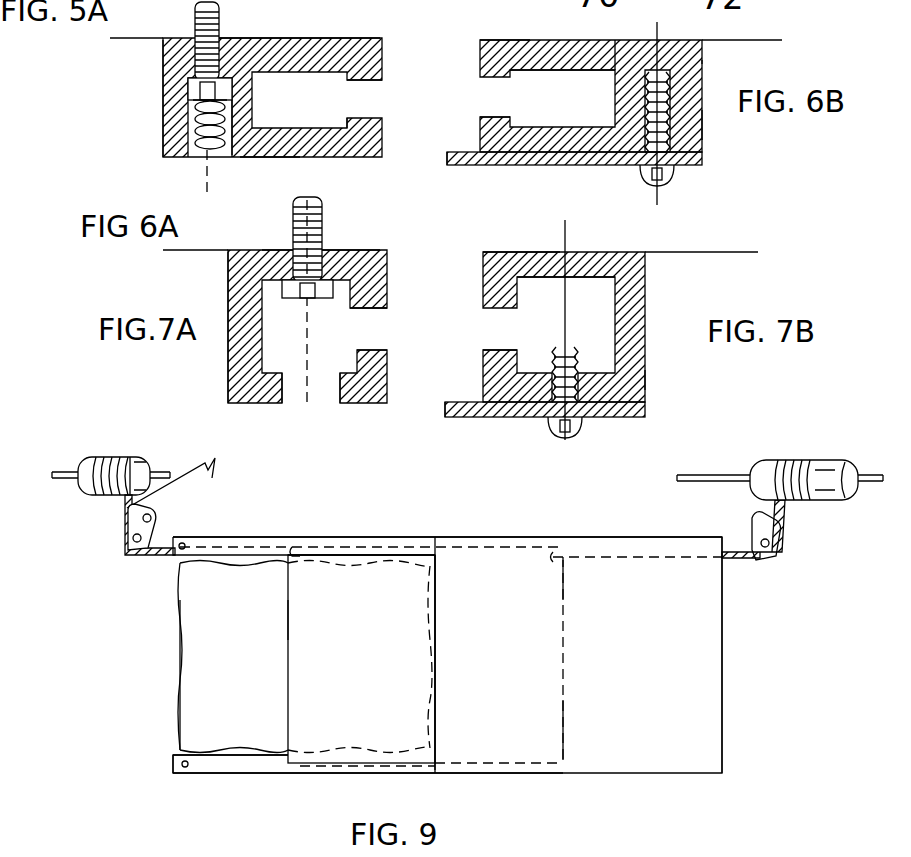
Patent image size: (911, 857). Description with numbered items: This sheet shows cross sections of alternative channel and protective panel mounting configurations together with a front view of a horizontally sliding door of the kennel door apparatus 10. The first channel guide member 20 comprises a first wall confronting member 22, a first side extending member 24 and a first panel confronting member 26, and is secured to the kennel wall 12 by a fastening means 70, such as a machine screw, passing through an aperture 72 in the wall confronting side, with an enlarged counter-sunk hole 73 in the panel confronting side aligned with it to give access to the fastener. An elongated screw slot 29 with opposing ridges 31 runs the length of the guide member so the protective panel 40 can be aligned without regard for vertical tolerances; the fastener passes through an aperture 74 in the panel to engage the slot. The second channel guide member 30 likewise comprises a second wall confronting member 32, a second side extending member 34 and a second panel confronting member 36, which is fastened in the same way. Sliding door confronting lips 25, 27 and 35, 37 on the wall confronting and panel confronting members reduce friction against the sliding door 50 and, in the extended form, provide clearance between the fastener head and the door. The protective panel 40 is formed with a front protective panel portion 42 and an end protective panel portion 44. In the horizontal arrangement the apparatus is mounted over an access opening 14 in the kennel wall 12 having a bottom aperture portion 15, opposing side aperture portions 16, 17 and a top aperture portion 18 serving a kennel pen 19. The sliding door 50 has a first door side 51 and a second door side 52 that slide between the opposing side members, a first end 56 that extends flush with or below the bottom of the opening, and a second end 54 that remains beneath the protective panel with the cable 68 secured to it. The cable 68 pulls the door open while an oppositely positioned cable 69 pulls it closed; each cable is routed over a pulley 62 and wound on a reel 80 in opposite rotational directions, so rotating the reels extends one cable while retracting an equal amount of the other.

In FIG. 9, the kennel door apparatus 10 is at (553, 778).
In FIG. 6A, the kennel wall 12 is at (143, 40).
In FIG. 6B, the kennel wall 12 is at (735, 40).
In FIG. 7A, the kennel wall 12 is at (192, 250).
In FIG. 7B, the kennel wall 12 is at (670, 252).
In FIG. 9, the access opening 14 is at (210, 650).
In FIG. 9, the bottom aperture portion 15 is at (218, 755).
In FIG. 9, the side aperture portion 16 is at (182, 615).
In FIG. 9, the side aperture portion 17 is at (437, 590).
In FIG. 9, the top aperture portion 18 is at (273, 553).
In FIG. 9, the kennel pen 19 is at (217, 708).
In FIG. 6A, the first channel guide member 20 is at (158, 90).
In FIG. 7A, the first channel guide member 20 is at (218, 298).
In FIG. 9, the first channel guide member 20 is at (362, 550).
In FIG. 6A, the first wall confronting member 22 is at (310, 38).
In FIG. 7A, the first wall confronting member 22 is at (280, 250).
In FIG. 6A, the first side extending member 24 is at (165, 140).
In FIG. 7A, the first side extending member 24 is at (228, 383).
In FIG. 6A, the sliding door confronting lip 25 is at (360, 80).
In FIG. 7A, the sliding door confronting lip 25 is at (365, 307).
In FIG. 6A, the first panel confronting member 26 is at (255, 157).
In FIG. 7A, the first panel confronting member 26 is at (355, 403).
In FIG. 9, the first panel confronting member 26 is at (340, 550).
In FIG. 6A, the sliding door confronting lip 27 is at (347, 122).
In FIG. 7A, the sliding door confronting lip 27 is at (365, 352).
In FIG. 6A, the screw slot 29 is at (204, 152).
In FIG. 6B, the screw slot 29 is at (700, 62).
In FIG. 6B, the second channel guide member 30 is at (708, 104).
In FIG. 7B, the second channel guide member 30 is at (645, 340).
In FIG. 9, the second channel guide member 30 is at (244, 760).
In FIG. 6B, the opposing ridges 31 is at (650, 70).
In FIG. 6B, the second wall confronting member 32 is at (525, 40).
In FIG. 7B, the second wall confronting member 32 is at (530, 252).
In FIG. 6B, the second side extending member 34 is at (702, 125).
In FIG. 7B, the second side extending member 34 is at (645, 380).
In FIG. 6B, the sliding door confronting lip 35 is at (493, 72).
In FIG. 7B, the sliding door confronting lip 35 is at (485, 300).
In FIG. 6B, the second panel confronting member 36 is at (530, 165).
In FIG. 7B, the second panel confronting member 36 is at (500, 417).
In FIG. 9, the second panel confronting member 36 is at (330, 763).
In FIG. 6B, the sliding door confronting lip 37 is at (487, 117).
In FIG. 7B, the sliding door confronting lip 37 is at (490, 350).
In FIG. 6B, the protective panel 40 is at (448, 148).
In FIG. 7B, the protective panel 40 is at (458, 402).
In FIG. 9, the protective panel 40 is at (645, 745).
In FIG. 9, the front protective panel portion 42 is at (672, 612).
In FIG. 9, the end protective panel portion 44 is at (722, 705).
In FIG. 9, the sliding door 50 is at (288, 675).
In FIG. 9, the first door side 51 is at (460, 548).
In FIG. 9, the second door side 52 is at (500, 766).
In FIG. 9, the second end 54 is at (566, 660).
In FIG. 9, the first end 56 is at (288, 618).
In FIG. 9, the pulley 62 is at (150, 527).
In FIG. 9, the cable 68 is at (215, 470).
In FIG. 9, the opposing cable 69 is at (785, 530).
In FIG. 6A, the fastening means 70 is at (190, 88).
In FIG. 6B, the fastening means 70 is at (670, 185).
In FIG. 7A, the fastening means 70 is at (315, 292).
In FIG. 7B, the fastening means 70 is at (585, 430).
In FIG. 6A, the aperture 72 is at (217, 30).
In FIG. 6B, the aperture 72 is at (645, 160).
In FIG. 7A, the aperture 72 is at (325, 248).
In FIG. 7B, the aperture 72 is at (645, 412).
In FIG. 6A, the counter-sunk hole 73 is at (222, 155).
In FIG. 7A, the counter-sunk hole 73 is at (303, 388).
In FIG. 9, the counter-sunk hole 73 is at (178, 767).
In FIG. 6B, the aperture 74 is at (702, 157).
In FIG. 7B, the aperture 74 is at (565, 348).
In FIG. 9, the reel 80 is at (95, 460).